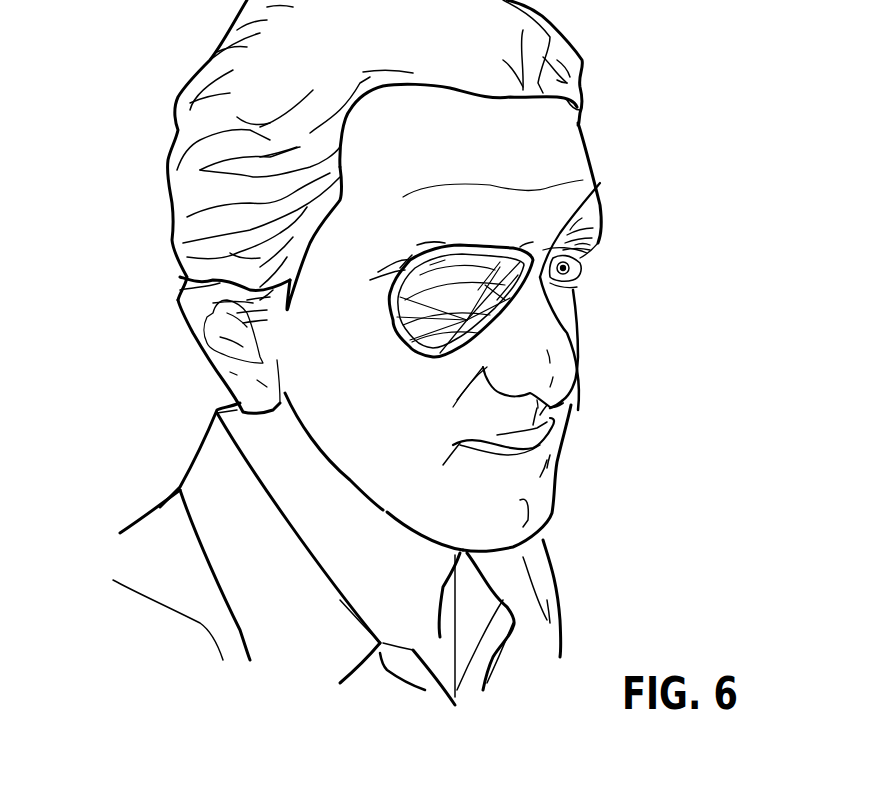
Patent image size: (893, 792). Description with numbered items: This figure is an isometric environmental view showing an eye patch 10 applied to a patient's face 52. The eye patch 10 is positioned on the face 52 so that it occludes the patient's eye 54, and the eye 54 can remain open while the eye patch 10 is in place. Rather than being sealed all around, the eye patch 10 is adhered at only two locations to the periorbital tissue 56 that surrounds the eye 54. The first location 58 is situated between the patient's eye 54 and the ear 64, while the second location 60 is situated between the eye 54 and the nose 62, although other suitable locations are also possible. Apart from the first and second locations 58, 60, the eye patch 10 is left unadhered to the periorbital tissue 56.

The eye patch 10 is at (421, 291).
The face 52 is at (578, 430).
The eye 54 is at (578, 277).
The periorbital tissue 56 is at (381, 322).
The first location 58 is at (380, 333).
The second location 60 is at (598, 200).
The nose 62 is at (567, 380).
The ear 64 is at (213, 350).